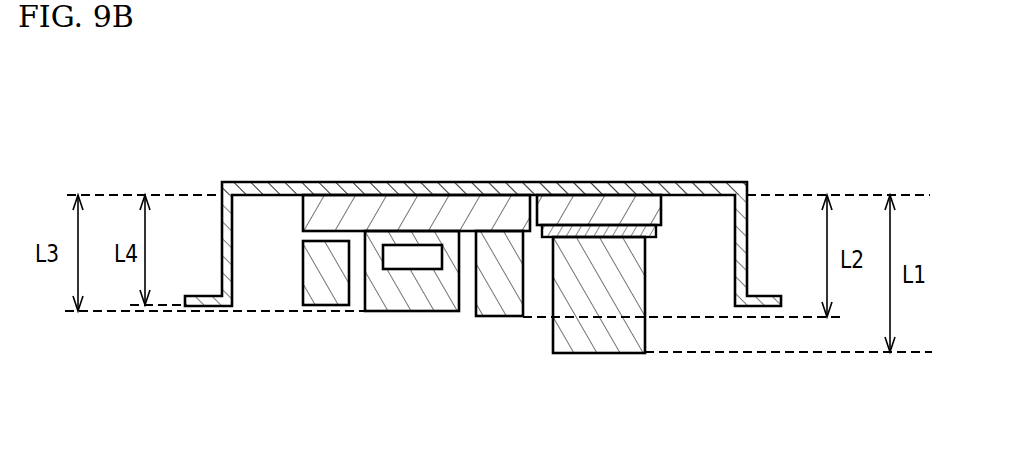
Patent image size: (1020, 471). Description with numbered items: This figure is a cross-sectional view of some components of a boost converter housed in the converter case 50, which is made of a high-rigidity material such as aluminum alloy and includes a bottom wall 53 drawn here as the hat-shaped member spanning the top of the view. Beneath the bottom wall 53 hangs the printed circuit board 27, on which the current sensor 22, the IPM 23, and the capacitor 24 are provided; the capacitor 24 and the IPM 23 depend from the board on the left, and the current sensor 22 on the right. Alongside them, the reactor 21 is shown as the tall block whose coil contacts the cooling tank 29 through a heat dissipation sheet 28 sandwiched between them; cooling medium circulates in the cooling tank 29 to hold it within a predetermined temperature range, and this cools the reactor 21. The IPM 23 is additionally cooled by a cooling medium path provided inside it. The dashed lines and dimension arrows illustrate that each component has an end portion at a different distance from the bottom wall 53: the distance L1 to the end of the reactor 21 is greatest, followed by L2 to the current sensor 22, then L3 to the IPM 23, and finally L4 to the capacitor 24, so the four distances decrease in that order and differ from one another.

The reactor 21 is at (618, 248).
The current sensor 22 is at (502, 242).
The intelligent power module (IPM) 23 is at (437, 238).
The capacitor 24 is at (323, 252).
The printed circuit board 27 is at (391, 203).
The heat dissipation sheet 28 is at (587, 231).
The cooling tank 29 is at (566, 201).
The converter case 50 is at (483, 215).
The bottom wall 53 is at (281, 190).